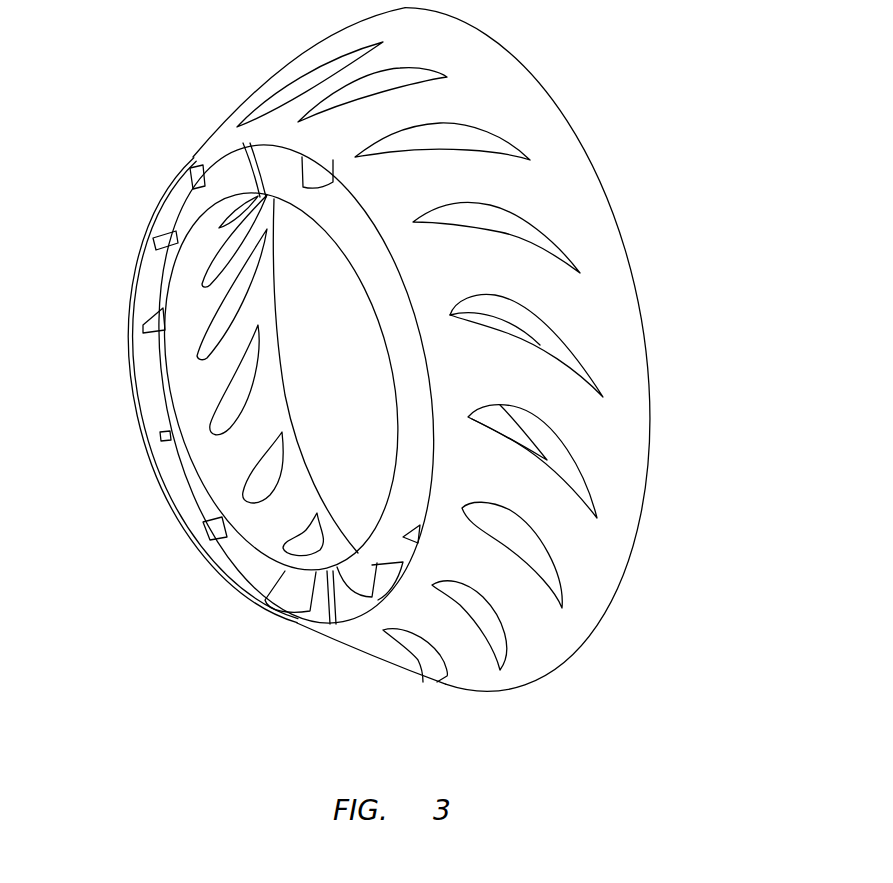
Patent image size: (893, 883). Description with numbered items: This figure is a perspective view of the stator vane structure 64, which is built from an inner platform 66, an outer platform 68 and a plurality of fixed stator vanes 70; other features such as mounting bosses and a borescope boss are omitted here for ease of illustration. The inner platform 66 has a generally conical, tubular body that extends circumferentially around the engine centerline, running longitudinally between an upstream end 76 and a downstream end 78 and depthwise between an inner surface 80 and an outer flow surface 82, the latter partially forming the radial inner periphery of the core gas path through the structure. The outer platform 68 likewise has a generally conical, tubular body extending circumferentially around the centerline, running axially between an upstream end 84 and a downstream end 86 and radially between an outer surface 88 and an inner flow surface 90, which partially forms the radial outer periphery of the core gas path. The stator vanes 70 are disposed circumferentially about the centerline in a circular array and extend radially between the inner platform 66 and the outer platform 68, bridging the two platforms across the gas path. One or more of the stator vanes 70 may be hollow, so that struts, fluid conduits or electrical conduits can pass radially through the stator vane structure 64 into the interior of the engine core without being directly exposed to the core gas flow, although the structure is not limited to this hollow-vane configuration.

The stator vane structure 64 is at (540, 73).
The inner platform 66 is at (306, 432).
The outer platform 68 is at (640, 268).
The fixed stator vanes 70 is at (204, 184).
The upstream end 76 is at (188, 480).
The downstream end 78 is at (393, 487).
The inner surface 80 is at (265, 418).
The outer flow surface 82 is at (390, 297).
The upstream end 84 is at (373, 240).
The downstream end 86 is at (615, 218).
The outer surface 88 is at (575, 197).
The inner flow surface 90 is at (235, 568).